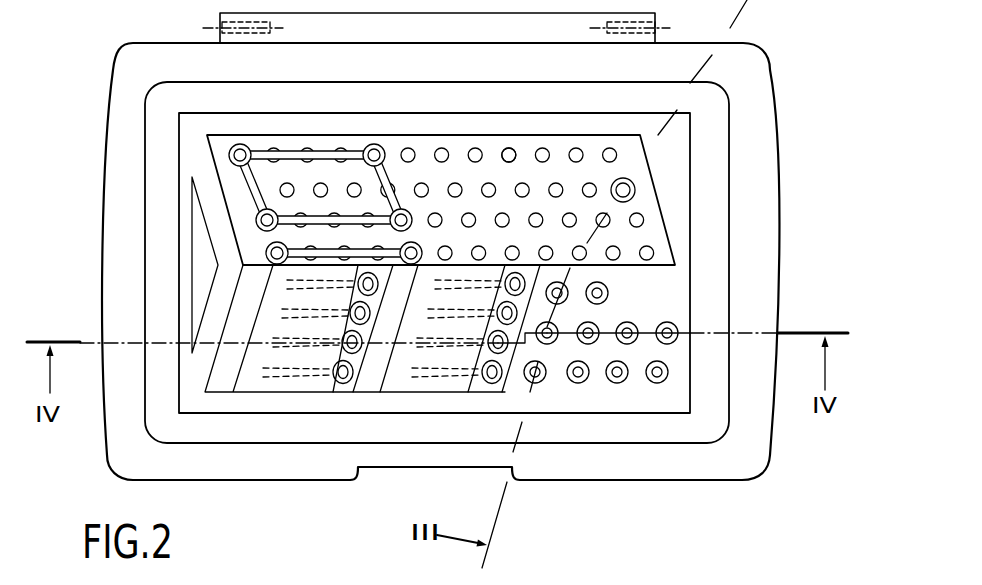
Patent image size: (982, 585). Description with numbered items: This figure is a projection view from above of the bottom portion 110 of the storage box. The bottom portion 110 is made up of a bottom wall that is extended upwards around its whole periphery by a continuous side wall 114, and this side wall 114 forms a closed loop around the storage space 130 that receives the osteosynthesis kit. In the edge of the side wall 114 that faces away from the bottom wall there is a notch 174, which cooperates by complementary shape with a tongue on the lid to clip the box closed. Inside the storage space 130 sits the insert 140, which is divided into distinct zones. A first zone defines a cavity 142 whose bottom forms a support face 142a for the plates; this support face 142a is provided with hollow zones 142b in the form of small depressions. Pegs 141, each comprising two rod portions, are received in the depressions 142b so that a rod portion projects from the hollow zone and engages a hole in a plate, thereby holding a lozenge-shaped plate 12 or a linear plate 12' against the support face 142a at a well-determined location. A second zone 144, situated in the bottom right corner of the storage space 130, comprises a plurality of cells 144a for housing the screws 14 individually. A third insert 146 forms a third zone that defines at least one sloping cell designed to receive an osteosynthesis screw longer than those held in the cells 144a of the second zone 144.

The bottom portion 110 is at (100, 70).
The side wall 114 is at (162, 135).
The storage space 130 is at (706, 130).
The insert 140 is at (185, 167).
The cavity 142 is at (455, 155).
The support face 142a is at (519, 157).
The hollow zones 142b is at (580, 155).
The pegs 141 is at (623, 190).
The osteosynthesis plate 12 is at (320, 141).
The linear plate 12' is at (344, 157).
The screws 14 is at (333, 392).
The third insert 146 is at (273, 400).
The second zone 144 is at (595, 403).
The cells 144a is at (657, 383).
The notch 174 is at (451, 467).